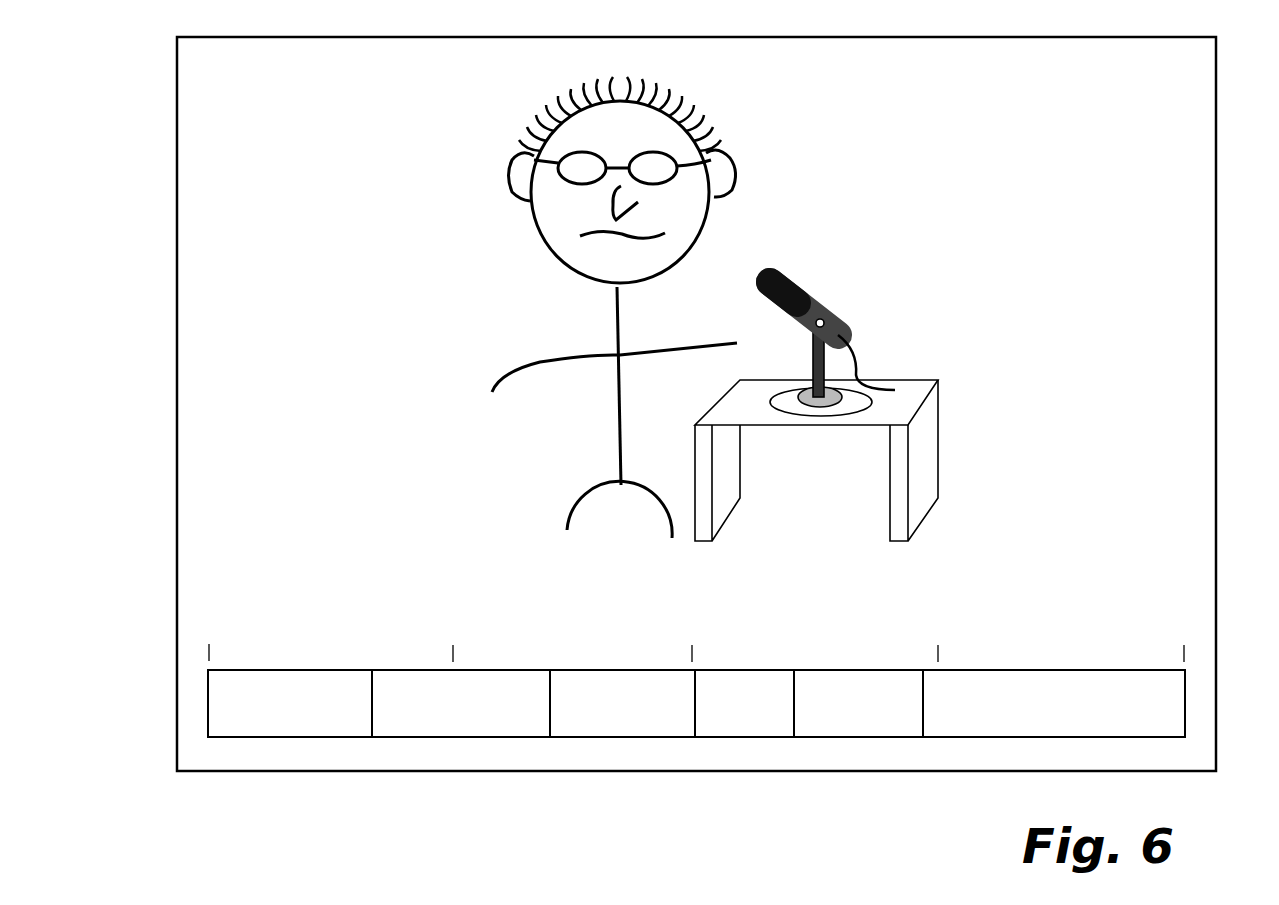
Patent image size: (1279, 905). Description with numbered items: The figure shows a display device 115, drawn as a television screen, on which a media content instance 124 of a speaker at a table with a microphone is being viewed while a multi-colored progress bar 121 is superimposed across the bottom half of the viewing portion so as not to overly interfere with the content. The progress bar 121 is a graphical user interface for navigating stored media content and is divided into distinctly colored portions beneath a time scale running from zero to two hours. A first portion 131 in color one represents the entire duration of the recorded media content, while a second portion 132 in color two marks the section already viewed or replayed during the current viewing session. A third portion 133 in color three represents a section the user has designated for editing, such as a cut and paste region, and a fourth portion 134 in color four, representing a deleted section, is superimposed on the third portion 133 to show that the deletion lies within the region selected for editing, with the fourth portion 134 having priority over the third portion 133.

The display device 115 is at (1216, 107).
The media content instance 124 is at (824, 193).
The progress bar 121 is at (208, 702).
The first portion 131 is at (460, 728).
The second portion 132 is at (290, 728).
The third portion 133 is at (622, 728).
The fourth portion 134 is at (745, 728).